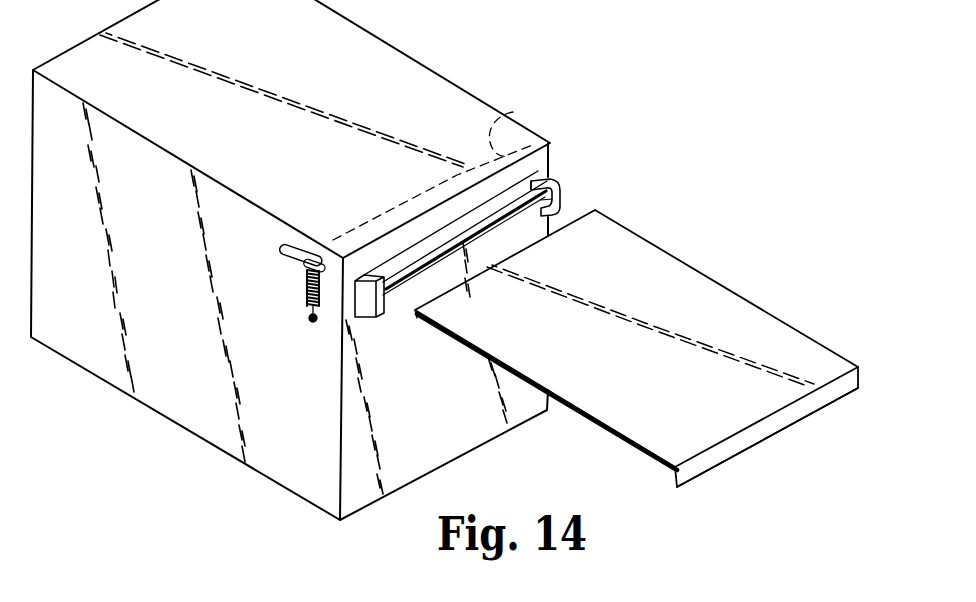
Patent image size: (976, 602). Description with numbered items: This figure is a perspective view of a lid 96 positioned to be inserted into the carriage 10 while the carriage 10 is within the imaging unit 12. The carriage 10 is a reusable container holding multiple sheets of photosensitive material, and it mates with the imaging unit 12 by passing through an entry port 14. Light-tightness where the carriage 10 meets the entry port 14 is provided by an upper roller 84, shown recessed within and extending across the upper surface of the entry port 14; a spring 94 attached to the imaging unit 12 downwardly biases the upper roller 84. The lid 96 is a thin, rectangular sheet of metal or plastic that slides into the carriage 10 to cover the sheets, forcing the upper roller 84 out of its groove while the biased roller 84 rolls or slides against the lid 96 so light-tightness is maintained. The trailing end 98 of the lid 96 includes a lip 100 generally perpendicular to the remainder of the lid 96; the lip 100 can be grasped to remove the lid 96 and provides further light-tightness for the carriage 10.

The imaging unit 12 is at (458, 76).
The upper roller 84 is at (514, 112).
The entry port 14 is at (548, 185).
The carriage 10 is at (573, 195).
The lid 96 is at (694, 268).
The trailing end 98 is at (821, 366).
The lip 100 is at (755, 438).
The spring 94 is at (306, 291).